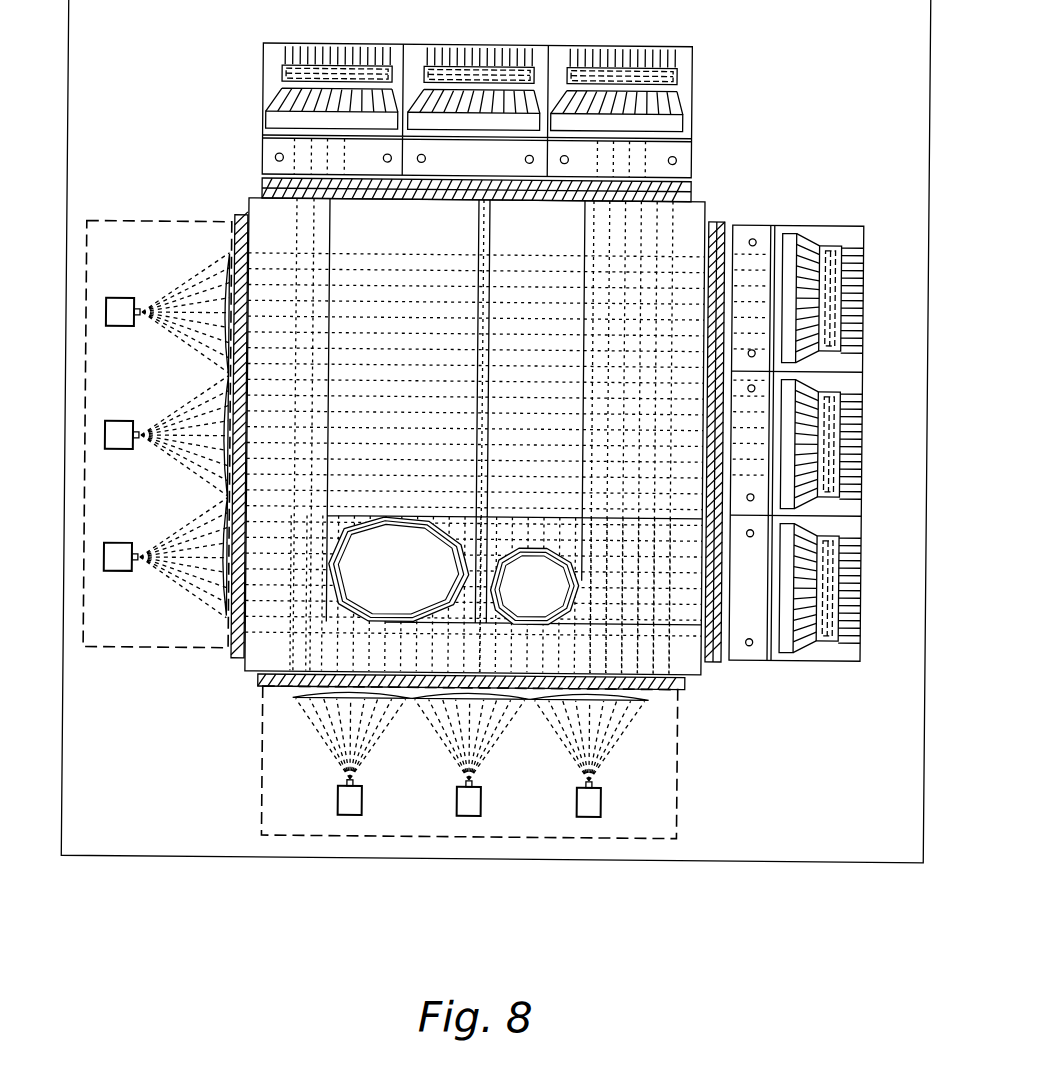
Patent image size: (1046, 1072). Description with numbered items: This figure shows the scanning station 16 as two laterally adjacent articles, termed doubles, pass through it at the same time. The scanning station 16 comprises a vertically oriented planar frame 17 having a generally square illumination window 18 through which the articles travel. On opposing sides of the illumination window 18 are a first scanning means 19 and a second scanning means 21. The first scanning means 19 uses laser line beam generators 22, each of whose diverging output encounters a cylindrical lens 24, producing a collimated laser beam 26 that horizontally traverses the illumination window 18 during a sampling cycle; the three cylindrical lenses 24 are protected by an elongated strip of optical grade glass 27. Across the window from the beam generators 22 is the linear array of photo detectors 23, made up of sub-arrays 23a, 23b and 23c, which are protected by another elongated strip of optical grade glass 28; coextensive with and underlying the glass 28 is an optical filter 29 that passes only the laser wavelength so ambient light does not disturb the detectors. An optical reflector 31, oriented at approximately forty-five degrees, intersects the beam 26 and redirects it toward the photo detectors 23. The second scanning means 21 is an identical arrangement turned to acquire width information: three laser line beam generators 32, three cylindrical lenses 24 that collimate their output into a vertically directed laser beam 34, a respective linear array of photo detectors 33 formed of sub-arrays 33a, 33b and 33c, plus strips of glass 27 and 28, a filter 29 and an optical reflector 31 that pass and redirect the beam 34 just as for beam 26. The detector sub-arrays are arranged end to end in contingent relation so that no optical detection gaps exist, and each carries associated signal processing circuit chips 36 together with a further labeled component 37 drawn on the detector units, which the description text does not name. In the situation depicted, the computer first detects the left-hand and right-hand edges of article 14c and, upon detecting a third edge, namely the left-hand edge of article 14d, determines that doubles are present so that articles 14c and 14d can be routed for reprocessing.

The article 14c is at (413, 579).
The article 14d is at (547, 592).
The scanning station 16 is at (74, 866).
The planar frame 17 is at (212, 843).
The illumination window 18 is at (684, 222).
The first scanning means 19 is at (147, 185).
The second scanning means 21 is at (770, 88).
The laser line beam generators 22 is at (103, 458).
The linear array of photo detectors 23 is at (786, 200).
The sub-array 23a is at (860, 652).
The sub-array 23b is at (860, 388).
The sub-array 23c is at (860, 362).
The cylindrical lens 24 is at (228, 270).
The collimated laser beam 26 is at (410, 256).
The strip of optical grade glass 27 is at (235, 215).
The strip of optical grade glass 28 is at (262, 192).
The optical filter 29 is at (262, 184).
The optical reflector 31 is at (505, 148).
The laser line beam generators 32 is at (338, 805).
The linear array of photo detectors 33 is at (705, 115).
The sub-array 33a is at (265, 72).
The sub-array 33b is at (537, 55).
The sub-array 33c is at (694, 78).
The vertically directed laser beam 34 is at (598, 242).
The signal processing circuit chips 36 is at (790, 236).
The lamp 37 is at (393, 73).